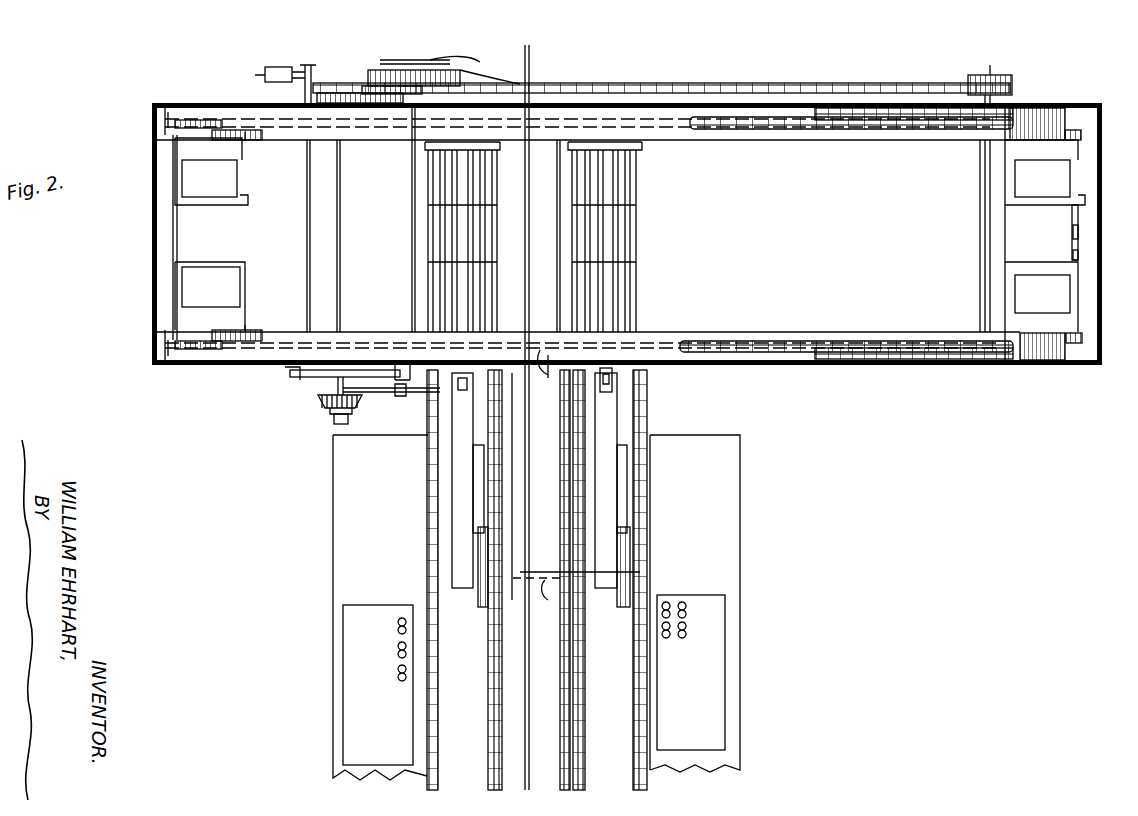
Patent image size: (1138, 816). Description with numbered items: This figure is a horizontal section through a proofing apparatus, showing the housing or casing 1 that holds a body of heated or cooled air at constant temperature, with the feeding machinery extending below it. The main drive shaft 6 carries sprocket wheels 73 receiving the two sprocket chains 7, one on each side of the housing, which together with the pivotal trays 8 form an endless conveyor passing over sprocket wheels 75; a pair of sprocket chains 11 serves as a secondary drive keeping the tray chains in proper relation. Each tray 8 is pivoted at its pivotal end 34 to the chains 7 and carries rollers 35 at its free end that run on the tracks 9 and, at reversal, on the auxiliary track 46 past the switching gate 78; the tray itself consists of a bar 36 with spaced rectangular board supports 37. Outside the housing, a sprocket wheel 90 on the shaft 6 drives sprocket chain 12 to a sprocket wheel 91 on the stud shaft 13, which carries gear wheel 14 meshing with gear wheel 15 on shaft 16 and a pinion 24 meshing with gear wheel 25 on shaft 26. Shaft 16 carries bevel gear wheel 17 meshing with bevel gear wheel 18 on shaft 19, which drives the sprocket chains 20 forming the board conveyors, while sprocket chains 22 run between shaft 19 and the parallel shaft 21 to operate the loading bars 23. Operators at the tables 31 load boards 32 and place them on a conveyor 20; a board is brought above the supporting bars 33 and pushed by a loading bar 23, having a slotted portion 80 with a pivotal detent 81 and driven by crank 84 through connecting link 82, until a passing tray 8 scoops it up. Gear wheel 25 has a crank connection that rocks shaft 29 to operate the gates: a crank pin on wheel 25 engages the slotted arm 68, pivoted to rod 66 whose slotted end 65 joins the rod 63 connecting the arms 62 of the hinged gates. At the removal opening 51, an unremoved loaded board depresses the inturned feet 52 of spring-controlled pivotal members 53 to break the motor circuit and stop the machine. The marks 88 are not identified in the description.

The housing or casing 1 is at (755, 103).
The main drive shaft 6 is at (980, 270).
The sprocket chains 7 is at (718, 129).
The pivotal trays 8 is at (630, 171).
The tracks 9 is at (333, 135).
The sprocket chains 11 is at (866, 108).
The sprocket chain 12 is at (665, 92).
The stud shaft 13 is at (390, 70).
The gear wheel 14 is at (385, 108).
The gear wheel 15 is at (317, 98).
The shaft 16 is at (340, 256).
The bevel gear wheel 17 is at (322, 404).
The bevel gear wheel 18 is at (350, 416).
The shaft 19 is at (400, 396).
The sprocket chains 20 is at (488, 735).
The shaft 21 is at (548, 598).
The sprocket chains 22 is at (562, 520).
The loading bar 23 is at (458, 525).
The pinion 24 is at (388, 60).
The gear wheel 25 is at (467, 84).
The shaft 26 is at (448, 68).
The shaft 29 is at (307, 232).
The tables 31 is at (335, 578).
The boards 32 is at (350, 660).
The supporting bars 33 is at (460, 232).
The pivotal end 34 is at (168, 120).
The rollers 35 is at (240, 140).
The bar 36 is at (157, 240).
The board supports 37 is at (217, 200).
The auxiliary track 46 is at (175, 125).
The opening 51 is at (1085, 210).
The inturned feet 52 is at (1080, 258).
The pivotal members 53 is at (1080, 232).
The arms 62 is at (400, 360).
The rod 63 is at (320, 378).
The slotted end 65 is at (290, 374).
The rod 66 is at (275, 67).
The arm 68 is at (330, 70).
The sprocket wheels 73 is at (985, 120).
The sprocket wheels 75 is at (168, 118).
The switching gate 78 is at (275, 140).
The slotted portion 80 is at (608, 368).
The pivotal detent 81 is at (612, 380).
The connecting link 82 is at (475, 497).
The crank 84 is at (482, 563).
The holes 88 is at (542, 641).
The sprocket wheel 90 is at (1013, 85).
The sprocket wheel 91 is at (365, 86).